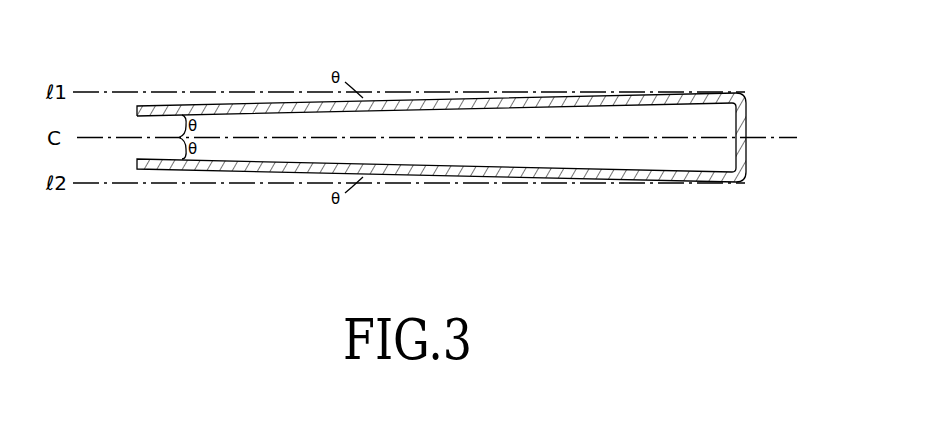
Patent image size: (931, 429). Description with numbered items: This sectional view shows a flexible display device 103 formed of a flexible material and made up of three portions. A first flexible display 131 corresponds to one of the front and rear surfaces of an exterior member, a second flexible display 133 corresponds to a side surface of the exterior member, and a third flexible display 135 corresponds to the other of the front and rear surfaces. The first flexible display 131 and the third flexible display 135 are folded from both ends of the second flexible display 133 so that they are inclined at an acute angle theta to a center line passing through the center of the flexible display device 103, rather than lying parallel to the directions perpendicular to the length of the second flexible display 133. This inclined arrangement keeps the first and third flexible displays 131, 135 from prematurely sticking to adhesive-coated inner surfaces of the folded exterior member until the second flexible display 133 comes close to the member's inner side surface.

The flexible display device 103 is at (247, 99).
The first flexible display 131 is at (488, 97).
The second flexible display 133 is at (747, 119).
The third flexible display 135 is at (482, 176).